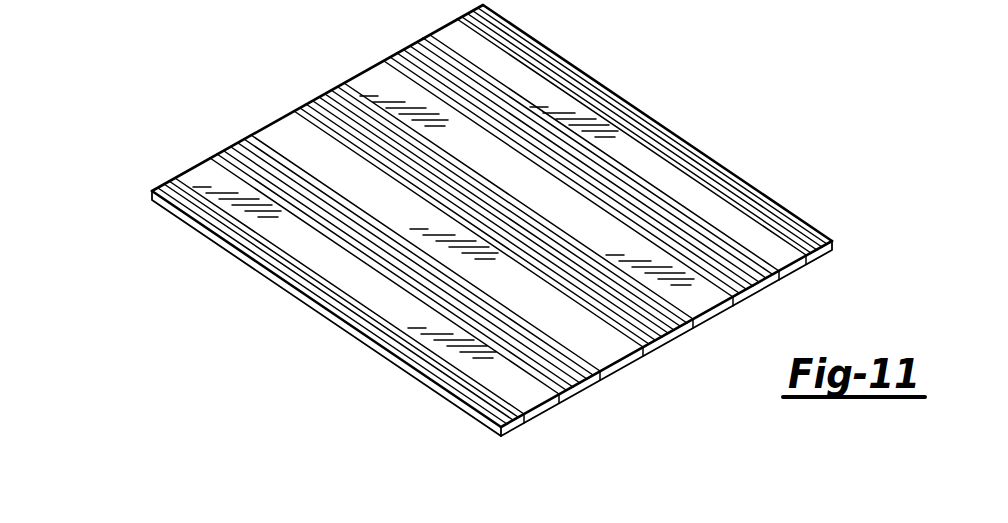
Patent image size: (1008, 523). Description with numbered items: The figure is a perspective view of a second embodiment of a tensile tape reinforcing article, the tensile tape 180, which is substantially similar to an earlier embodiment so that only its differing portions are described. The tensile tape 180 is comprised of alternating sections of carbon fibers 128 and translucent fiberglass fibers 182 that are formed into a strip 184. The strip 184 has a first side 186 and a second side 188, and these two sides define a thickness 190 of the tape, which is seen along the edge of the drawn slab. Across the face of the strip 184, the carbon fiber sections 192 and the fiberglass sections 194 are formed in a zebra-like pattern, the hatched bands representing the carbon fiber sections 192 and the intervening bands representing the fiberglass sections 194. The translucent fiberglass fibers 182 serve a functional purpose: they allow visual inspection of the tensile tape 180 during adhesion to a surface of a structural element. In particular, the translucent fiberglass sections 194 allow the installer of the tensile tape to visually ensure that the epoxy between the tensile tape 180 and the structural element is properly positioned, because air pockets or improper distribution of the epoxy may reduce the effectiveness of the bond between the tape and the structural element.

The carbon fibers 128 is at (804, 221).
The tensile tape 180 is at (186, 78).
The translucent fiberglass fibers 182 is at (490, 60).
The strip 184 is at (660, 123).
The first side 186 is at (713, 208).
The second side 188 is at (294, 284).
The thickness 190 is at (150, 198).
The carbon fiber sections 192 is at (388, 57).
The fiberglass sections 194 is at (703, 302).